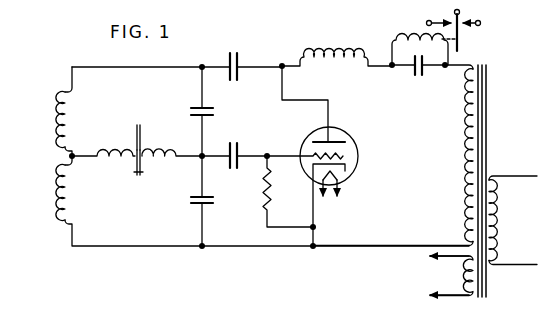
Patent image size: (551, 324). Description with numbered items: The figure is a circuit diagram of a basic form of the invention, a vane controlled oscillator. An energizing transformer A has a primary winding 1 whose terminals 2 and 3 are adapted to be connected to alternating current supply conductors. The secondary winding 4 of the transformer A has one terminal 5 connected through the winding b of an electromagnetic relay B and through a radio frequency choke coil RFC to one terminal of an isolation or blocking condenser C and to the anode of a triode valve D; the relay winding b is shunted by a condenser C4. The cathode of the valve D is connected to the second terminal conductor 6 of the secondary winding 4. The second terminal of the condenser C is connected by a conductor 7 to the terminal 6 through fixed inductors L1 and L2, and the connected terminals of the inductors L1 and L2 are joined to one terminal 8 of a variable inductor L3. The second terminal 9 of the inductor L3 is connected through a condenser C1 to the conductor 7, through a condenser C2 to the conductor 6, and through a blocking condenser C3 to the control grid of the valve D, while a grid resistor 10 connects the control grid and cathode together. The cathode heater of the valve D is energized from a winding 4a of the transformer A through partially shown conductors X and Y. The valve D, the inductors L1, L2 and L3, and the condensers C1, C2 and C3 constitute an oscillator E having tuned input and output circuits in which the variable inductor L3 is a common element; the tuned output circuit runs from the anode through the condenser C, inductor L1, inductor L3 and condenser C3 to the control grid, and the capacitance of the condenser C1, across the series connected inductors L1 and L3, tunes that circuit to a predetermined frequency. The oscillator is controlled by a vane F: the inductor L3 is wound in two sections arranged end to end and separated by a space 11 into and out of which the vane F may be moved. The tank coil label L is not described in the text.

The primary winding 1 is at (501, 217).
The primary winding terminal 2 is at (525, 264).
The primary winding terminal 3 is at (526, 175).
The secondary winding 4 is at (462, 161).
The heater winding 4a is at (461, 275).
The secondary winding terminal 5 is at (460, 69).
The terminal conductor 6 is at (448, 240).
The conductor 7 is at (202, 63).
The terminal of variable inductor 8 is at (80, 154).
The second terminal of variable inductor 9 is at (192, 154).
The grid resistor 10 is at (262, 187).
The space 11 is at (138, 176).
The energizing transformer A is at (494, 71).
The electromagnetic relay B is at (380, 31).
The isolation or blocking condenser C is at (231, 51).
The condenser C1 is at (215, 113).
The condenser C2 is at (216, 199).
The blocking condenser C3 is at (237, 143).
The condenser C4 is at (422, 78).
The triode valve D is at (352, 125).
The oscillator E is at (46, 99).
The vane F is at (141, 131).
The tank inductor L is at (418, 51).
The fixed inductor L1 is at (68, 117).
The fixed inductor L2 is at (66, 197).
The variable inductor L3 is at (108, 159).
The radio frequency choke coil RFC is at (349, 47).
The relay winding b is at (414, 40).
The heater conductor X is at (393, 218).
The heater conductor Y is at (400, 242).